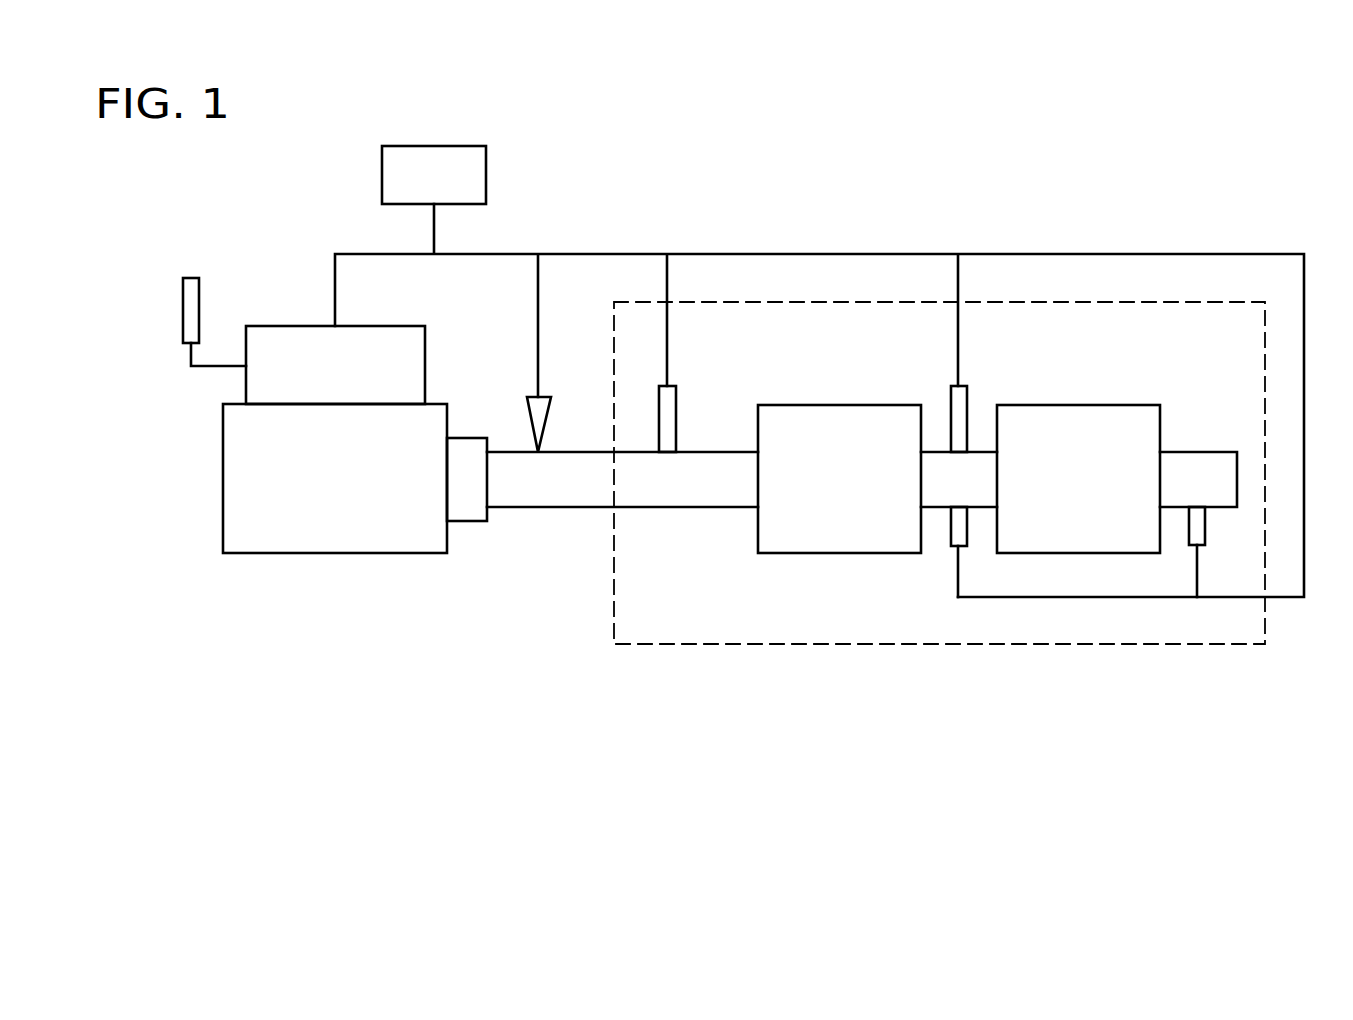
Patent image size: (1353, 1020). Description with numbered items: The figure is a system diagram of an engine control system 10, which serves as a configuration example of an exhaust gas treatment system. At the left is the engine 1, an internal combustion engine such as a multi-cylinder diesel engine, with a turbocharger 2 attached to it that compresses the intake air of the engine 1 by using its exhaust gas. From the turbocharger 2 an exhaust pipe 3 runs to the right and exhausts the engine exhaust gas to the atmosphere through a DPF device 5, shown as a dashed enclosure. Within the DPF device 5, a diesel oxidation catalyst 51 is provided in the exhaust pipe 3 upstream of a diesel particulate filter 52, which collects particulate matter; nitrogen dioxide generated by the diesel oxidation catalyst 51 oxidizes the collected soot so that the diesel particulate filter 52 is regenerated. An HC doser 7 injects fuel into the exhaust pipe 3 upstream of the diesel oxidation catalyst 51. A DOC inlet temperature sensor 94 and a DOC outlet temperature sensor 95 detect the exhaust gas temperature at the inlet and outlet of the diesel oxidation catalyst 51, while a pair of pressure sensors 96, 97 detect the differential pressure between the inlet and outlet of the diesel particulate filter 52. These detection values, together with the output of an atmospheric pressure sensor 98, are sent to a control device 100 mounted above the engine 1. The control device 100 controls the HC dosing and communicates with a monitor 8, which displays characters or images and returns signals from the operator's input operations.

The engine 1 is at (368, 555).
The turbocharger 2 is at (467, 521).
The exhaust pipe 3 is at (565, 508).
The DPF device 5 is at (1195, 302).
The HC doser 7 is at (547, 392).
The monitor 8 is at (487, 170).
The engine control system 10 is at (1095, 223).
The diesel oxidation catalyst 51 is at (843, 403).
The diesel particulate filter 52 is at (1065, 403).
The DOC inlet temperature sensor 94 is at (659, 410).
The DOC outlet temperature sensor 95 is at (951, 397).
The pressure sensor 96 is at (967, 525).
The pressure sensor 97 is at (1205, 525).
The atmospheric pressure sensor 98 is at (199, 303).
The control device 100 is at (425, 357).